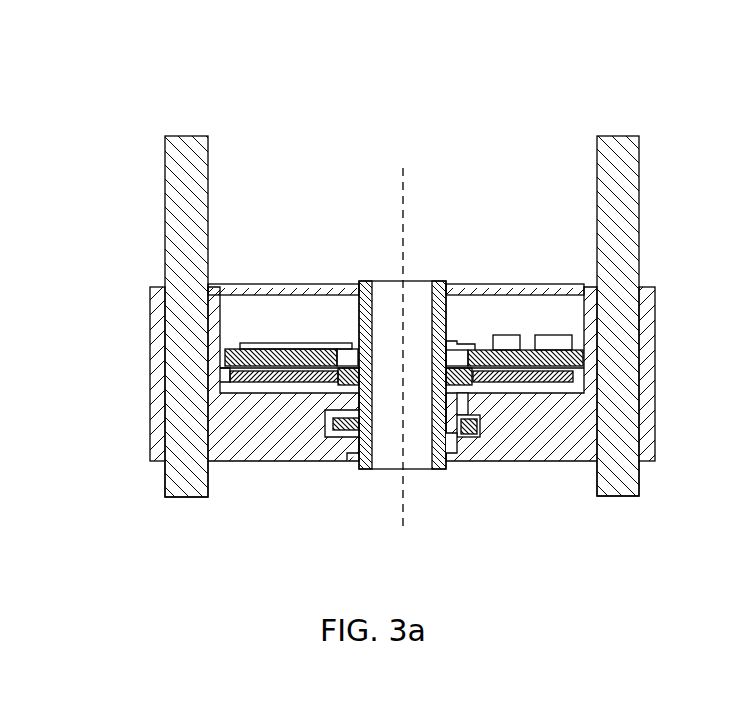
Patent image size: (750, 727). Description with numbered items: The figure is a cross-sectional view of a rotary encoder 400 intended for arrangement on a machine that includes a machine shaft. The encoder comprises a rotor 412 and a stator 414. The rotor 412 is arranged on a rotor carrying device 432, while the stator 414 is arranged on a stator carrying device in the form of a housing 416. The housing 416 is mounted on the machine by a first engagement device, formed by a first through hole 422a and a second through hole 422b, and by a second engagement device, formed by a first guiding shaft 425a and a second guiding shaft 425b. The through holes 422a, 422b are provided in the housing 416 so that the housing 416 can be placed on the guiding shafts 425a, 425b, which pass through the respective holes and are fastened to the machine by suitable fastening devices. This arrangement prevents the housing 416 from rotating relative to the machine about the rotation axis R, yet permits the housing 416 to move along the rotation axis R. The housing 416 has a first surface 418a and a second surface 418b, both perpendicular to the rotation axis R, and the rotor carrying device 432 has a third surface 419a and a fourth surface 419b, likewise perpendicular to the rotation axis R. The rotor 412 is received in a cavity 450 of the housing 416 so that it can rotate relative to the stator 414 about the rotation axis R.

The rotary encoder 400 is at (185, 75).
The rotor 412 is at (291, 385).
The stator 414 is at (278, 348).
The housing 416 is at (568, 286).
The first surface 418a is at (481, 416).
The second surface 418b is at (466, 432).
The third surface 419a is at (448, 412).
The fourth surface 419b is at (452, 436).
The first through hole 422a is at (165, 285).
The second through hole 422b is at (640, 287).
The first guiding shaft 425a is at (165, 487).
The second guiding shaft 425b is at (641, 480).
The rotor carrying device 432 is at (366, 293).
The cavity 450 is at (220, 378).